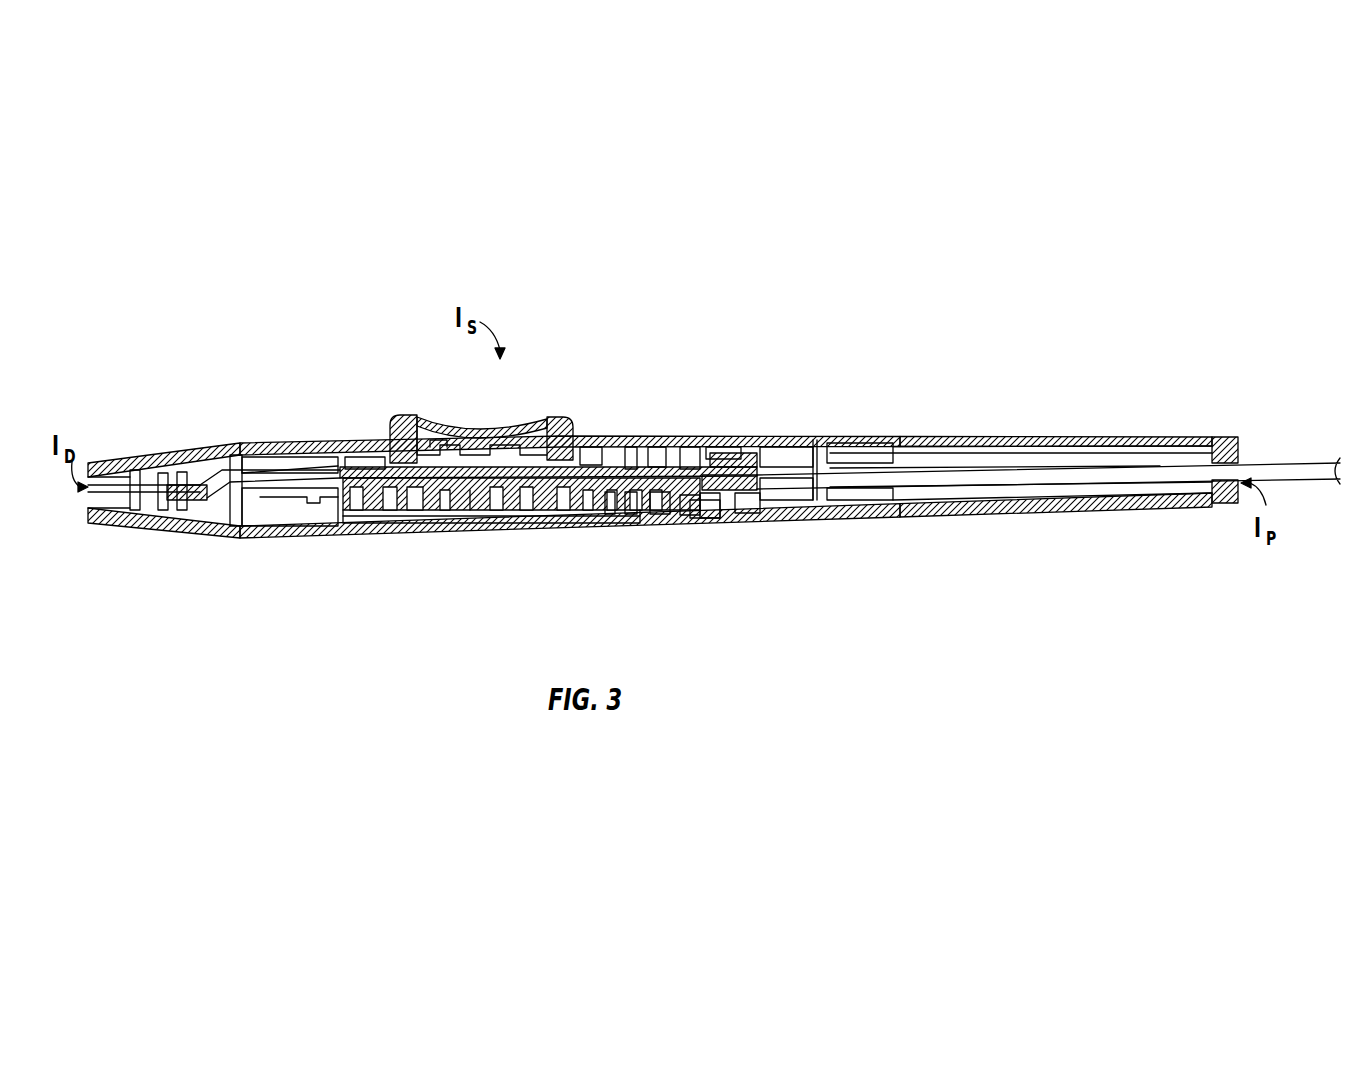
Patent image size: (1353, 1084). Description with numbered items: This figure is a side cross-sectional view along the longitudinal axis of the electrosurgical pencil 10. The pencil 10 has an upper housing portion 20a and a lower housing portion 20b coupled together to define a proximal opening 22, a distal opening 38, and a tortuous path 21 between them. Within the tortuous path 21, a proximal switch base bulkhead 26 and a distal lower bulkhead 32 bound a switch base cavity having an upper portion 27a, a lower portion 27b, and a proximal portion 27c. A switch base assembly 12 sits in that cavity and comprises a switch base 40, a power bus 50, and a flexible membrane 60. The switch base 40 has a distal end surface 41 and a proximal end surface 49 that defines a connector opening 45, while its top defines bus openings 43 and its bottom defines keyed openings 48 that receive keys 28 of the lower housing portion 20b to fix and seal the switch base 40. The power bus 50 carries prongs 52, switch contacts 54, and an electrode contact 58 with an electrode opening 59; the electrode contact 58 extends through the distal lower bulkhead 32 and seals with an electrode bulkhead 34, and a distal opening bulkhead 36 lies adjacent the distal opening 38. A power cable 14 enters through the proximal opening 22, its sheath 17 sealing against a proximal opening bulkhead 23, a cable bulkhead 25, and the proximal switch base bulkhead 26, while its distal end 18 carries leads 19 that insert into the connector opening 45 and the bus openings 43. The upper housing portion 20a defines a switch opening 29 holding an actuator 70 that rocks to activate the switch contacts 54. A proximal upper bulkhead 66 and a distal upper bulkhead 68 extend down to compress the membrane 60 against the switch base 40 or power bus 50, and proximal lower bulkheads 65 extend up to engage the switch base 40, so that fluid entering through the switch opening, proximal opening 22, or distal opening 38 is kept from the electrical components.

The pencil 10 is at (637, 370).
The switch base assembly 12 is at (543, 511).
The power cable 14 is at (1013, 478).
The sheath 17 is at (967, 482).
The distal end 18 is at (720, 505).
The leads 19 is at (693, 510).
The upper housing portion 20a is at (1093, 441).
The lower housing portion 20b is at (1093, 511).
The tortuous path 21 is at (846, 460).
The proximal opening 22 is at (1243, 462).
The proximal opening bulkhead 23 is at (1220, 440).
The cable bulkhead 25 is at (917, 440).
The proximal switch base bulkhead 26 is at (848, 463).
The upper portion of switch base cavity 27a is at (552, 440).
The lower portion of switch base cavity 27b is at (487, 512).
The proximal portion of switch base cavity 27c is at (772, 470).
The keys 28 is at (383, 497).
The switch opening 29 is at (382, 465).
The distal lower bulkhead 32 is at (350, 525).
The electrode bulkhead 34 is at (223, 493).
The distal opening bulkhead 36 is at (165, 510).
The distal opening 38 is at (78, 498).
The switch base 40 is at (463, 505).
The distal end surface 41 is at (305, 497).
The bus openings 43 is at (700, 465).
The connector opening 45 is at (790, 500).
The keyed openings 48 is at (387, 497).
The proximal end surface 49 is at (790, 478).
The power bus 50 is at (240, 505).
The prongs 52 is at (765, 470).
The switch contacts 54 is at (497, 440).
The electrode contact 58 is at (205, 500).
The electrode opening 59 is at (147, 440).
The flexible membrane 60 is at (425, 452).
The proximal lower bulkheads 65 is at (677, 513).
The proximal upper bulkhead 66 is at (675, 442).
The distal upper bulkhead 68 is at (337, 462).
The actuator 70 is at (520, 432).